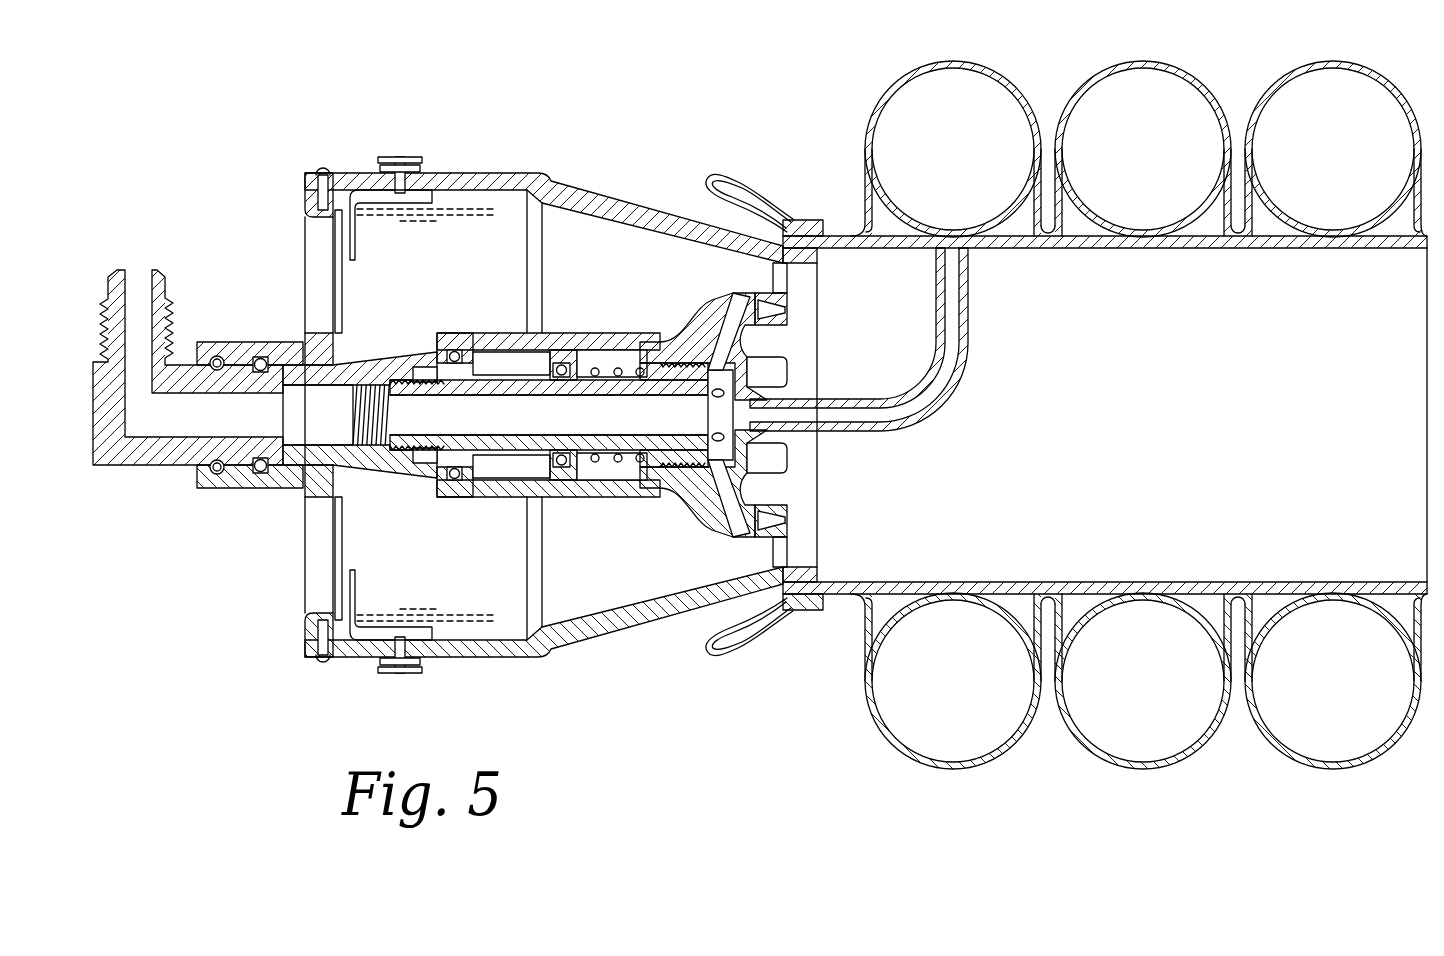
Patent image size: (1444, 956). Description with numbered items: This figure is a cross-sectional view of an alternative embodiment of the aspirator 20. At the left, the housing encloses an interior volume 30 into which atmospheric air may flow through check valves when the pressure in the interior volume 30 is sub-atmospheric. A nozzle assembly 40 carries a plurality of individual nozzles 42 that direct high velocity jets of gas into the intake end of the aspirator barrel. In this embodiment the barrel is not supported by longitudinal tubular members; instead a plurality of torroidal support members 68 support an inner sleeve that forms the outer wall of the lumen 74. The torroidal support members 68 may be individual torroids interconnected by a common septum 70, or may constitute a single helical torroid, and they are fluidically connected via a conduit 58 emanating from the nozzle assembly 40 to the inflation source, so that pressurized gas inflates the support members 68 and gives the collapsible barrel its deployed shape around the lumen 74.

The aspirator 20 is at (290, 713).
The interior volume 30 is at (626, 283).
The nozzle assembly 40 is at (717, 313).
The nozzle 42 is at (780, 313).
The conduit 58 is at (963, 358).
The torroidal support member 68 is at (897, 117).
The plate 70 is at (1388, 243).
The lumen 74 is at (1128, 430).